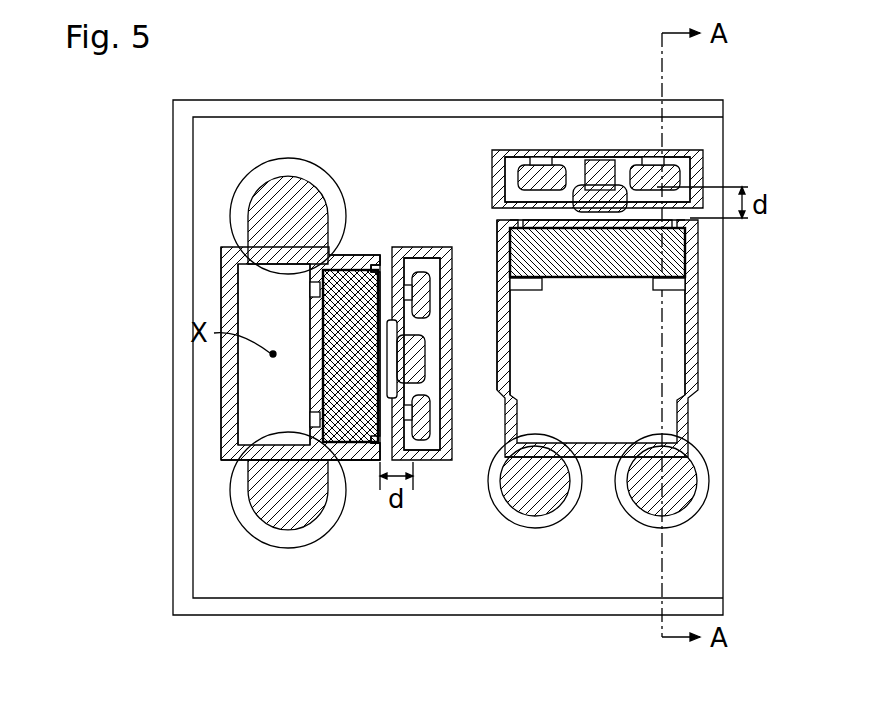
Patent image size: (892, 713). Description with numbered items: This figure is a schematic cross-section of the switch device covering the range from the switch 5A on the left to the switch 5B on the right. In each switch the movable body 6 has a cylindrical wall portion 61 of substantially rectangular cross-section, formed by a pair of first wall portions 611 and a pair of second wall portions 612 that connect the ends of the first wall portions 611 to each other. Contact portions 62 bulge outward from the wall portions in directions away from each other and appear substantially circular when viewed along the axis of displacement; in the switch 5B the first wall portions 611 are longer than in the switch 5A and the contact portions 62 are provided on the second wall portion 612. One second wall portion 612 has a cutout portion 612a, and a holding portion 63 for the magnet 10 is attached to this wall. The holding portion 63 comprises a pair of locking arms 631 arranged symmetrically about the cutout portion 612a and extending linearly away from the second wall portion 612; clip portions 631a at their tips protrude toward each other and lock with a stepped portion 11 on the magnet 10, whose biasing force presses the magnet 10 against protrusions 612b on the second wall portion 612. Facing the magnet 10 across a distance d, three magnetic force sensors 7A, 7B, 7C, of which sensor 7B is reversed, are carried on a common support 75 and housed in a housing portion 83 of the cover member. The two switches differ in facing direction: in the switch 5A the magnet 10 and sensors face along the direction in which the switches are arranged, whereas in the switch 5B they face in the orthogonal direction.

The switch 5A is at (402, 572).
The switch 5B is at (566, 572).
The movable body 6 is at (213, 463).
The cylindrical wall portion 61 is at (221, 417).
The first wall portion 611 is at (232, 250).
The second wall portion 612 is at (742, 345).
The cutout portion 612a is at (318, 405).
The protrusion 612b is at (313, 297).
The contact portion 62 is at (280, 193).
The holding portion 63 is at (333, 458).
The locking arm 631 is at (333, 250).
The clip portion 631a is at (358, 250).
The magnet 10 is at (368, 362).
The stepped portion 11 is at (350, 410).
The housing portion 83 is at (433, 247).
The support 75 is at (410, 247).
The magnetic force sensor 7A is at (430, 290).
The magnetic force sensor 7B is at (425, 350).
The magnetic force sensor 7C is at (430, 415).